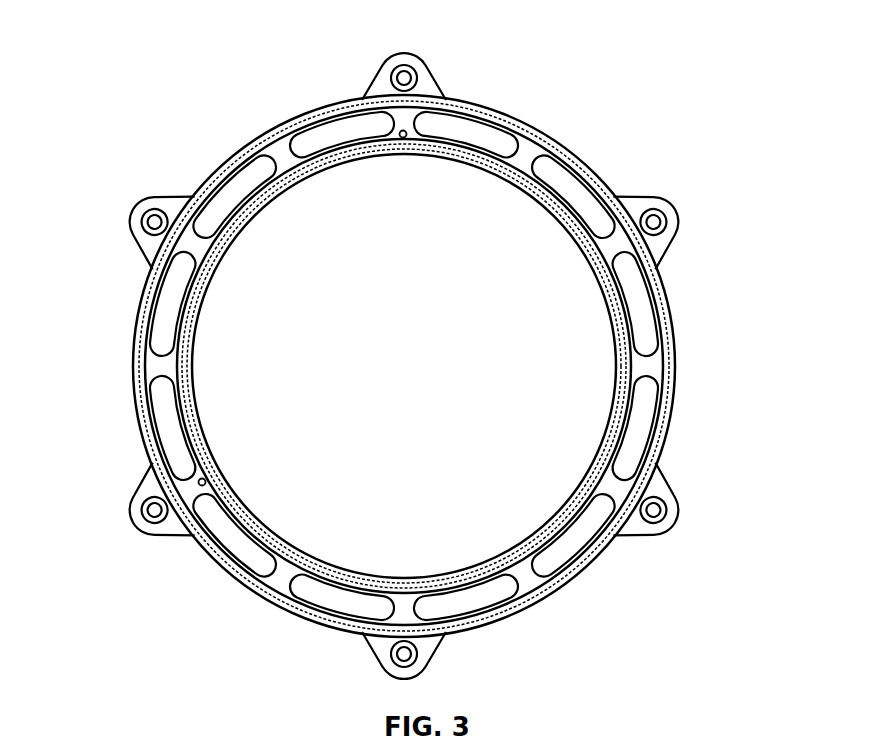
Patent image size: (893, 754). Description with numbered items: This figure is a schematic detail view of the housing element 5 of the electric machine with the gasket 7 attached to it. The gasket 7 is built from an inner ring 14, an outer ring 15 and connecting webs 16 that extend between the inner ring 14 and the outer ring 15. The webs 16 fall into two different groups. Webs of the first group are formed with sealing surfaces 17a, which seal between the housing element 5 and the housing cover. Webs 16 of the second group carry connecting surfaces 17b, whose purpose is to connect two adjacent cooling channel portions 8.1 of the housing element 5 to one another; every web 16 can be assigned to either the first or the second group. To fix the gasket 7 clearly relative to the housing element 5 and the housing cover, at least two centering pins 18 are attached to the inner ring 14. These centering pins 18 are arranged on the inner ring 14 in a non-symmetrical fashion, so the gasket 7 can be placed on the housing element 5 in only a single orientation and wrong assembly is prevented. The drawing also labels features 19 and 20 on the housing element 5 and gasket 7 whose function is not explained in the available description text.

The housing element 5 is at (525, 128).
The gasket 7 is at (205, 273).
The cooling channel portions 8.1 is at (655, 300).
The inner ring 14 is at (327, 155).
The outer ring 15 is at (318, 99).
The connecting webs 16 is at (280, 148).
The sealing surfaces 17a is at (598, 252).
The connecting surfaces 17b is at (638, 357).
The centering pins 18 is at (402, 141).
The mounting lug 19 is at (424, 63).
The slot 20 is at (240, 178).